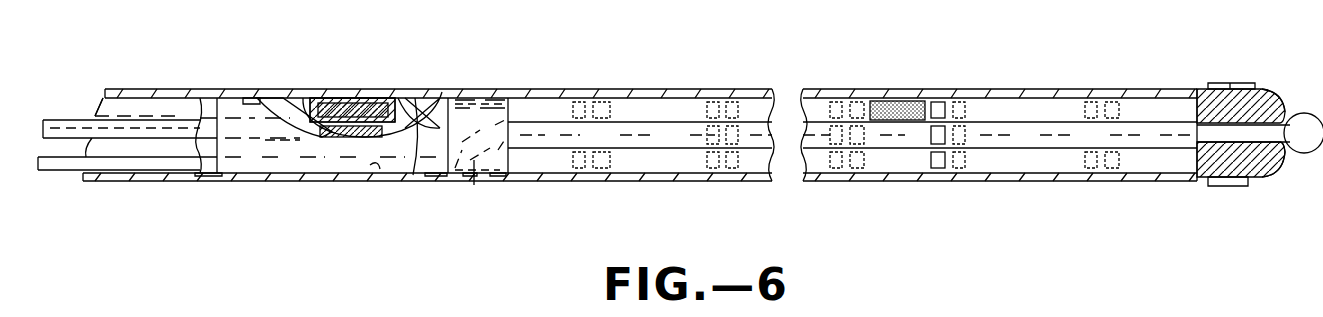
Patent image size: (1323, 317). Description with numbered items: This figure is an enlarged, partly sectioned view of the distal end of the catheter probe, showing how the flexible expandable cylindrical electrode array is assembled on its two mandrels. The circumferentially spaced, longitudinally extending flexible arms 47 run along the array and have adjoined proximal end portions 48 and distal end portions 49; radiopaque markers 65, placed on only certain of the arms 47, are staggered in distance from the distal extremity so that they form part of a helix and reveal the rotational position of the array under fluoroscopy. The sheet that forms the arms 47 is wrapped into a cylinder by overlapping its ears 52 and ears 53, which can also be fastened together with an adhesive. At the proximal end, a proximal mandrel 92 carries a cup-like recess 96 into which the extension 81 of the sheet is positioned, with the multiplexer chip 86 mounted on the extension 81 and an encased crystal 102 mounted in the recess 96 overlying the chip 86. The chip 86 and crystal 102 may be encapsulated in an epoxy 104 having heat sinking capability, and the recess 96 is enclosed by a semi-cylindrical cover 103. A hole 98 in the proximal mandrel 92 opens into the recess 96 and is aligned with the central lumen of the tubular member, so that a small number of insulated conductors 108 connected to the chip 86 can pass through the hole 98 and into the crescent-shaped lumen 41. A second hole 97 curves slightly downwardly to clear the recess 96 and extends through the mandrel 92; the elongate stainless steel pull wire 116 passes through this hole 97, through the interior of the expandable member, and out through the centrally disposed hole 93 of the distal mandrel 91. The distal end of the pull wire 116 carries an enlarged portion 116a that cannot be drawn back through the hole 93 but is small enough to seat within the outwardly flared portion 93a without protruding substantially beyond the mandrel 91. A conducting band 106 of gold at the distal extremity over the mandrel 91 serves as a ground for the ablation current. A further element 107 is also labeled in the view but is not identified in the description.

The crescent-shaped lumen 41 is at (137, 120).
The flexible arms 47 is at (655, 112).
The proximal end portions 48 is at (545, 110).
The distal end portions 49 is at (1187, 107).
The ears 52 is at (494, 96).
The ears 53 is at (479, 92).
The radiopaque markers 65 is at (891, 102).
The extension 81 is at (413, 175).
The multiplexer chip 86 is at (398, 90).
The distal mandrel 91 is at (1273, 167).
The proximal mandrel 92 is at (450, 92).
The centrally disposed hole 93 is at (1243, 142).
The outwardly flared portion 93a is at (1282, 115).
The cup-like recess 96 is at (288, 128).
The hole 97 is at (383, 165).
The additional hole 98 is at (242, 110).
The encased crystal 102 is at (369, 98).
The semi-cylindrical cover 103 is at (339, 95).
The epoxy 104 is at (285, 98).
The band 106 is at (1234, 83).
The stop 107 is at (242, 98).
The conductors 108 is at (63, 118).
The pull wire 116 is at (61, 166).
The enlarged portion 116a is at (1306, 144).